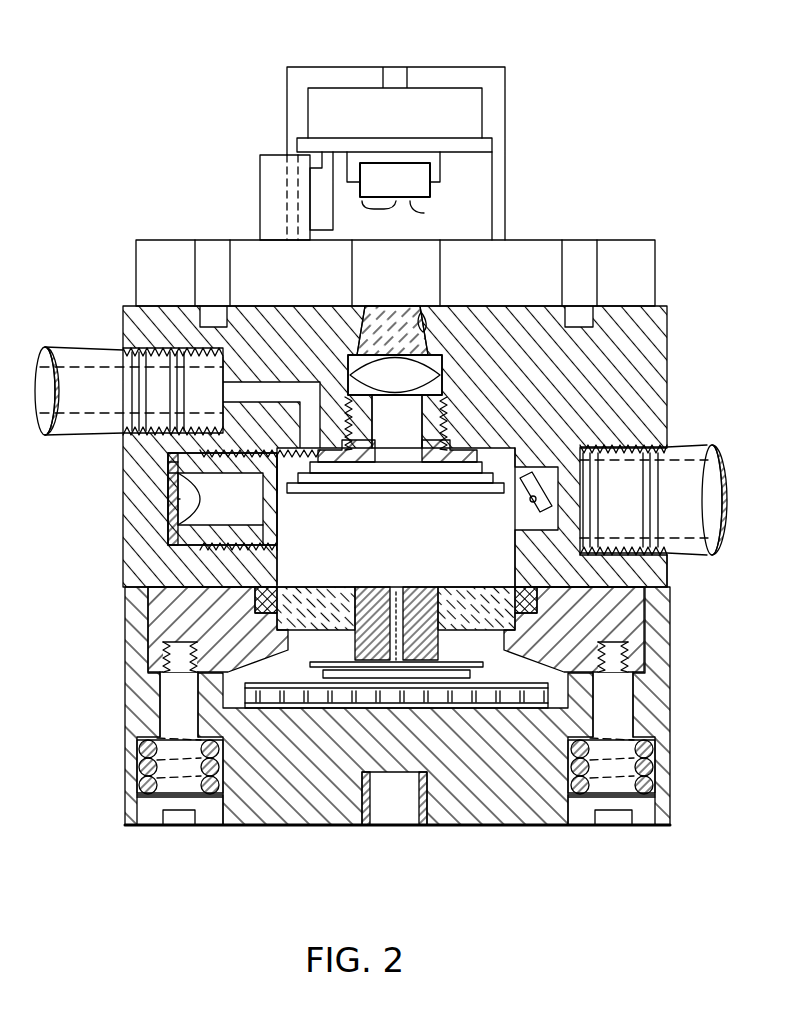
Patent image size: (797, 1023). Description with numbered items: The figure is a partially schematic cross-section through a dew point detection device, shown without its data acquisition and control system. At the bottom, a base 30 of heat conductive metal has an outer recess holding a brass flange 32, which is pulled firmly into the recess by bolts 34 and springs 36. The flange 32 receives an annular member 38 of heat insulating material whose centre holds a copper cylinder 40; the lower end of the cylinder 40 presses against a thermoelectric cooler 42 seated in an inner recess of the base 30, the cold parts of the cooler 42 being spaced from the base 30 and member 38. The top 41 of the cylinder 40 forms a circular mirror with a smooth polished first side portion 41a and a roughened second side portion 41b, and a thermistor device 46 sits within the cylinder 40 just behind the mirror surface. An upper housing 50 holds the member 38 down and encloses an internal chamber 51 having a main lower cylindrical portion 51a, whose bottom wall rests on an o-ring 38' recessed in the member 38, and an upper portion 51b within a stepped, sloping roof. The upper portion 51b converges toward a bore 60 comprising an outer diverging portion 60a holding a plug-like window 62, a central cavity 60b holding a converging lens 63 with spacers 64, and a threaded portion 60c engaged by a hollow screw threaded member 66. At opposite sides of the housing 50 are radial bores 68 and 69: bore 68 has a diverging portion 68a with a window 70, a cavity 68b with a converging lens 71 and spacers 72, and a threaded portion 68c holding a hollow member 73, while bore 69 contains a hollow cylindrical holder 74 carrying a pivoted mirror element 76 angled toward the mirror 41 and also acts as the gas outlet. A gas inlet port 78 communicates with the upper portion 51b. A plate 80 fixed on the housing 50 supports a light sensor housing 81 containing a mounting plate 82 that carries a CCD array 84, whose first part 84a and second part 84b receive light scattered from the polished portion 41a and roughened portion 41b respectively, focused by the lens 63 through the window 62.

The base 30 is at (300, 828).
The brass flange 32 is at (205, 630).
The bolts 34 is at (178, 697).
The springs 36 is at (137, 773).
The annular member 38 is at (356, 588).
The o-ring 38' is at (302, 608).
The copper cylinder 40 is at (460, 710).
The mirror 41 is at (387, 586).
The first side portion 41a is at (365, 586).
The second side portion 41b is at (418, 587).
The thermoelectric cooler 42 is at (250, 696).
The thermistor device 46 is at (405, 776).
The upper housing 50 is at (123, 308).
The internal chamber 51 is at (489, 551).
The lower cylindrical portion 51a is at (396, 517).
The upper portion 51b is at (482, 478).
The bore 60 is at (431, 341).
The outer inwardly diverging portion 60a is at (426, 306).
The central cylindrical cavity 60b is at (446, 412).
The screw threaded portion 60c is at (440, 438).
The window 62 is at (410, 306).
The converging lens 63 is at (450, 348).
The spacers 64 is at (416, 372).
The hollow screw threaded member 66 is at (452, 468).
The radial bore 68 is at (138, 537).
The outer inwardly diverging portion 68a is at (167, 462).
The central cylindrical cavity 68b is at (200, 549).
The inner screw threaded portion 68c is at (258, 566).
The radial bore 69 is at (645, 548).
The window 70 is at (188, 508).
The converging lens 71 is at (168, 497).
The spacers 72 is at (206, 499).
The hollow member 73 is at (277, 494).
The hollow cylindrical holder 74 is at (542, 494).
The mirror element 76 is at (534, 500).
The gas inlet port 78 is at (124, 352).
The plate 80 is at (177, 238).
The light sensor housing 81 is at (484, 66).
The mounting plate 82 is at (458, 136).
The CCD array 84 is at (410, 162).
The first part of the array 84a is at (435, 216).
The second part of the array 84b is at (373, 216).